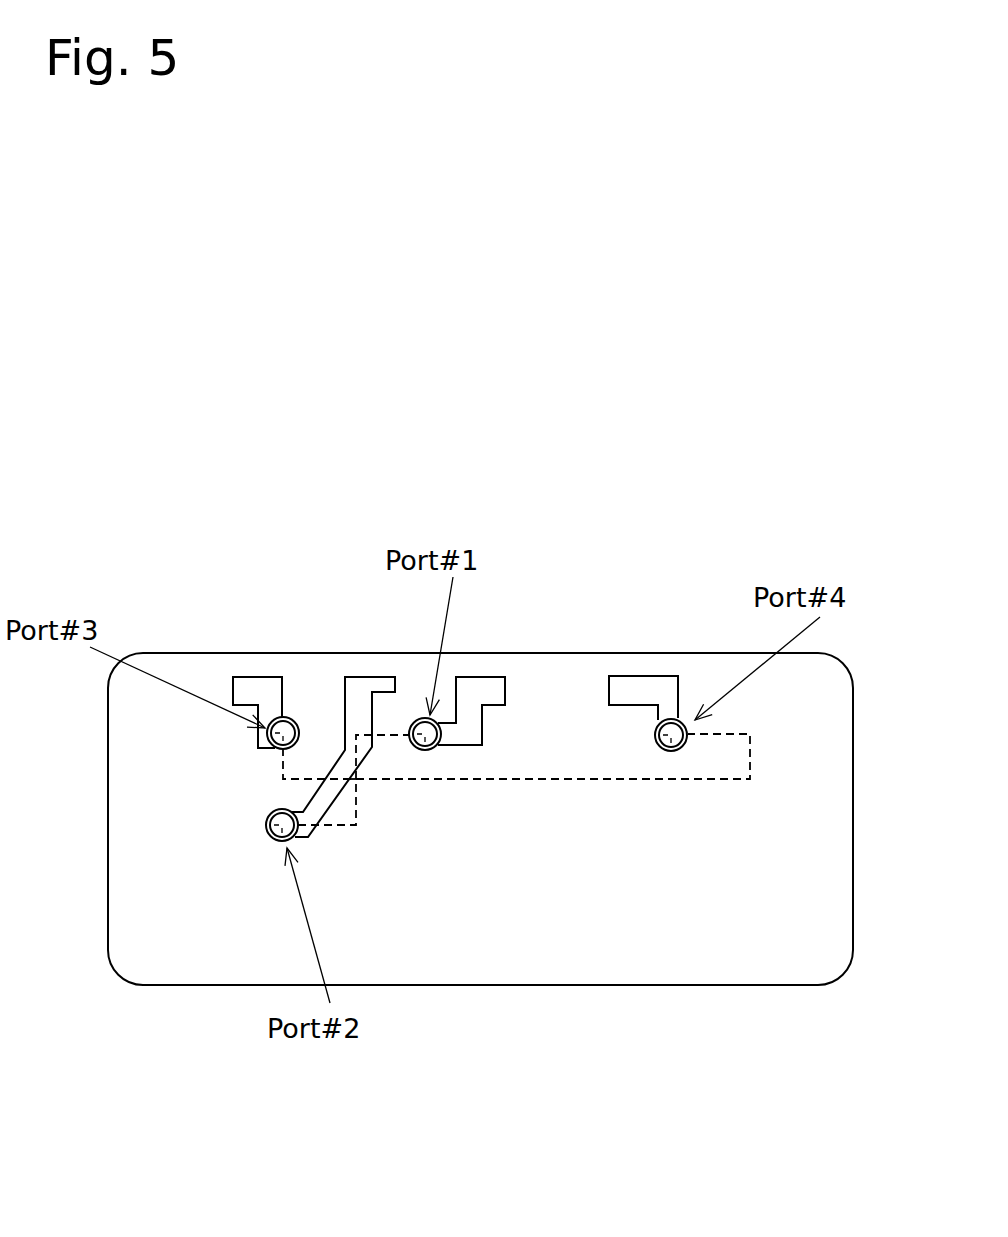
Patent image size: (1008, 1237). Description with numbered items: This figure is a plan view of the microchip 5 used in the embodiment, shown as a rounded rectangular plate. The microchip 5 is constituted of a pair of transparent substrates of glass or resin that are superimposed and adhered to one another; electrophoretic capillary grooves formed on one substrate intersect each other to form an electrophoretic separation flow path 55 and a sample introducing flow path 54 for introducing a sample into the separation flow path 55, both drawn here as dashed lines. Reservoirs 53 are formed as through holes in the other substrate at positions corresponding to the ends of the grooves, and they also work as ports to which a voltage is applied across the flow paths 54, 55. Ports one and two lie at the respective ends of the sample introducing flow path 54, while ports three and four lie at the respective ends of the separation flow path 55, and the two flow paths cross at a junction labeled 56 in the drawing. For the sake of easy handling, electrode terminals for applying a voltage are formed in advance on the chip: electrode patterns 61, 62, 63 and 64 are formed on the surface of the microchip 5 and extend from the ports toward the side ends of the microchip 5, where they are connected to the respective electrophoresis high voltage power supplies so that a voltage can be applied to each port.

The microchip 5 is at (852, 740).
The reservoirs 53 is at (279, 722).
The sample introducing flow path 54 is at (358, 827).
The electrophoretic separation flow path 55 is at (560, 779).
The connection point 56 is at (358, 782).
The electrode pattern 61 is at (487, 683).
The electrode pattern 62 is at (358, 685).
The electrode pattern 63 is at (273, 683).
The electrode pattern 64 is at (633, 683).